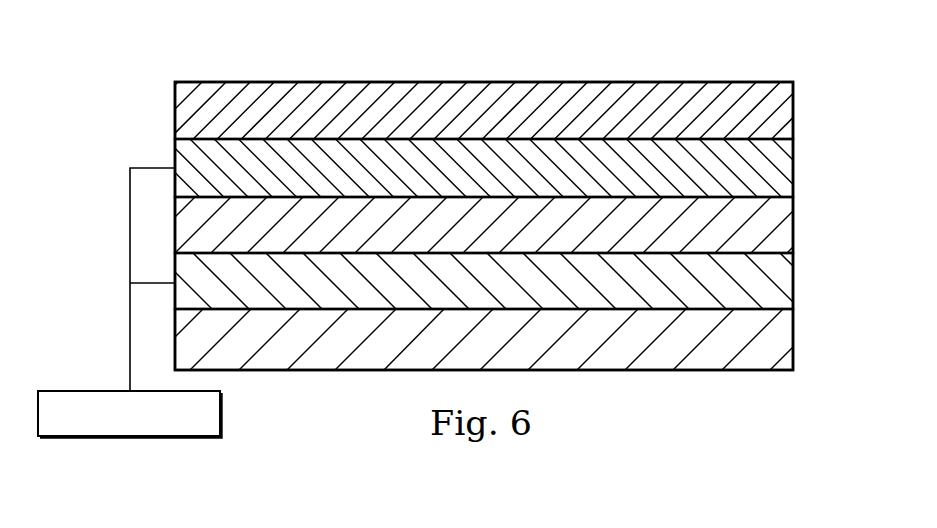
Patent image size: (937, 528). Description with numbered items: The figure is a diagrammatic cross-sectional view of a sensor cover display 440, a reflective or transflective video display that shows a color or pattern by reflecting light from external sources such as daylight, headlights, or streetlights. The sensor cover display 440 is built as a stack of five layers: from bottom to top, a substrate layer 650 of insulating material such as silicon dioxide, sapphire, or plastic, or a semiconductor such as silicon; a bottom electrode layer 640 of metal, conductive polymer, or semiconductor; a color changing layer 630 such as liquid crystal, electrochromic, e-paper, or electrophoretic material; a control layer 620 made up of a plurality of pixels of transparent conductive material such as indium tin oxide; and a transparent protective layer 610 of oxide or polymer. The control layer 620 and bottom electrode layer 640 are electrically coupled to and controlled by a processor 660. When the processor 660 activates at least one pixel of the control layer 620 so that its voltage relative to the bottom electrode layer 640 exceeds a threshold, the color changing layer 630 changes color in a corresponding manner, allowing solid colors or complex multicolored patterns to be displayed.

The sensor cover display 440 is at (713, 70).
The protective layer 610 is at (795, 110).
The control layer 620 is at (795, 165).
The color changing layer 630 is at (795, 225).
The bottom electrode layer 640 is at (795, 282).
The substrate layer 650 is at (795, 340).
The processor 660 is at (118, 438).